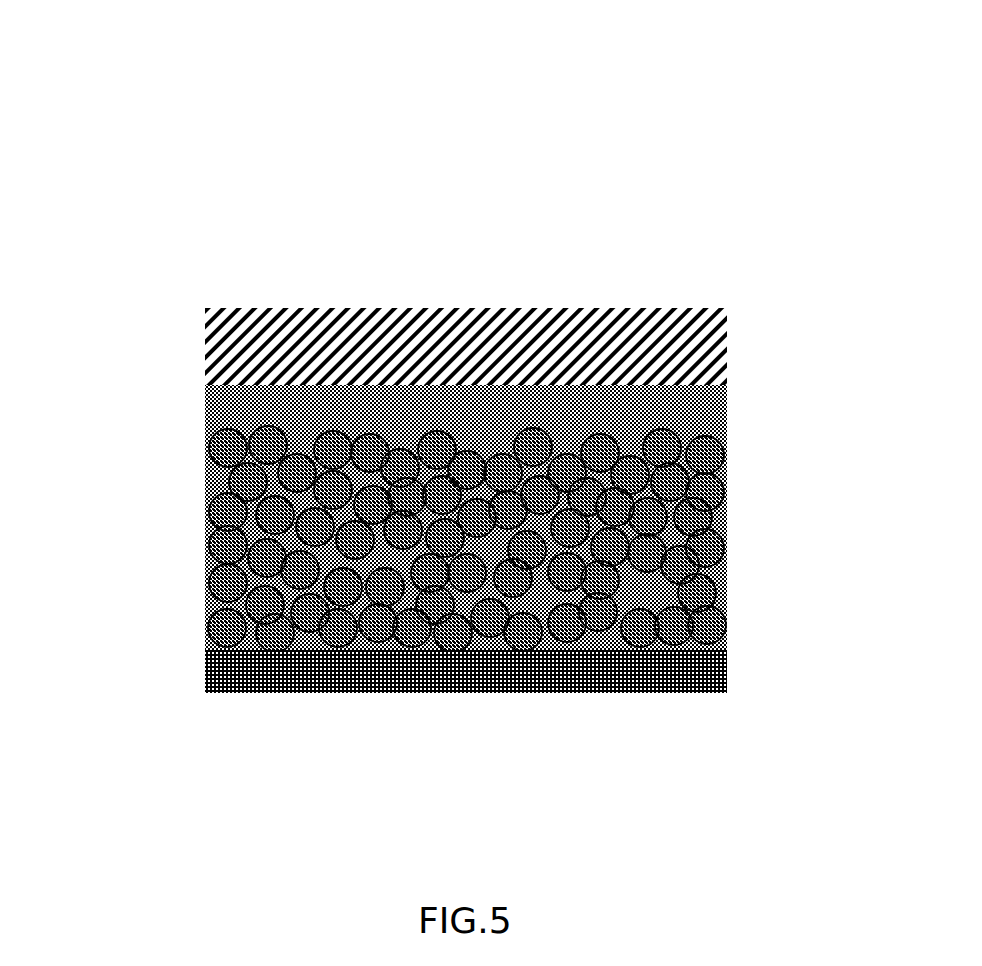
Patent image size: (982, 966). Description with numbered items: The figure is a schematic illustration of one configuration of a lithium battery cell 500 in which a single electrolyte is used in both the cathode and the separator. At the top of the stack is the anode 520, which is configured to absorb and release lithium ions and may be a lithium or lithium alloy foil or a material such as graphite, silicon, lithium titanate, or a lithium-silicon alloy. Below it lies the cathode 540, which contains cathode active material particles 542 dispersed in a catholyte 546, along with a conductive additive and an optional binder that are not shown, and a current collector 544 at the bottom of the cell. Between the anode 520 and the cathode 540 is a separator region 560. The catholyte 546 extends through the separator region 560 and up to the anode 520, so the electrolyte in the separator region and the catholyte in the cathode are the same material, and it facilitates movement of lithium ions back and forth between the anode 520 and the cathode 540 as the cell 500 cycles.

The lithium battery cell 500 is at (266, 187).
The anode 520 is at (247, 332).
The cathode 540 is at (193, 432).
The cathode active material particles 542 is at (572, 527).
The current collector 544 is at (247, 672).
The catholyte 546 is at (678, 412).
The separator region 560 is at (740, 392).